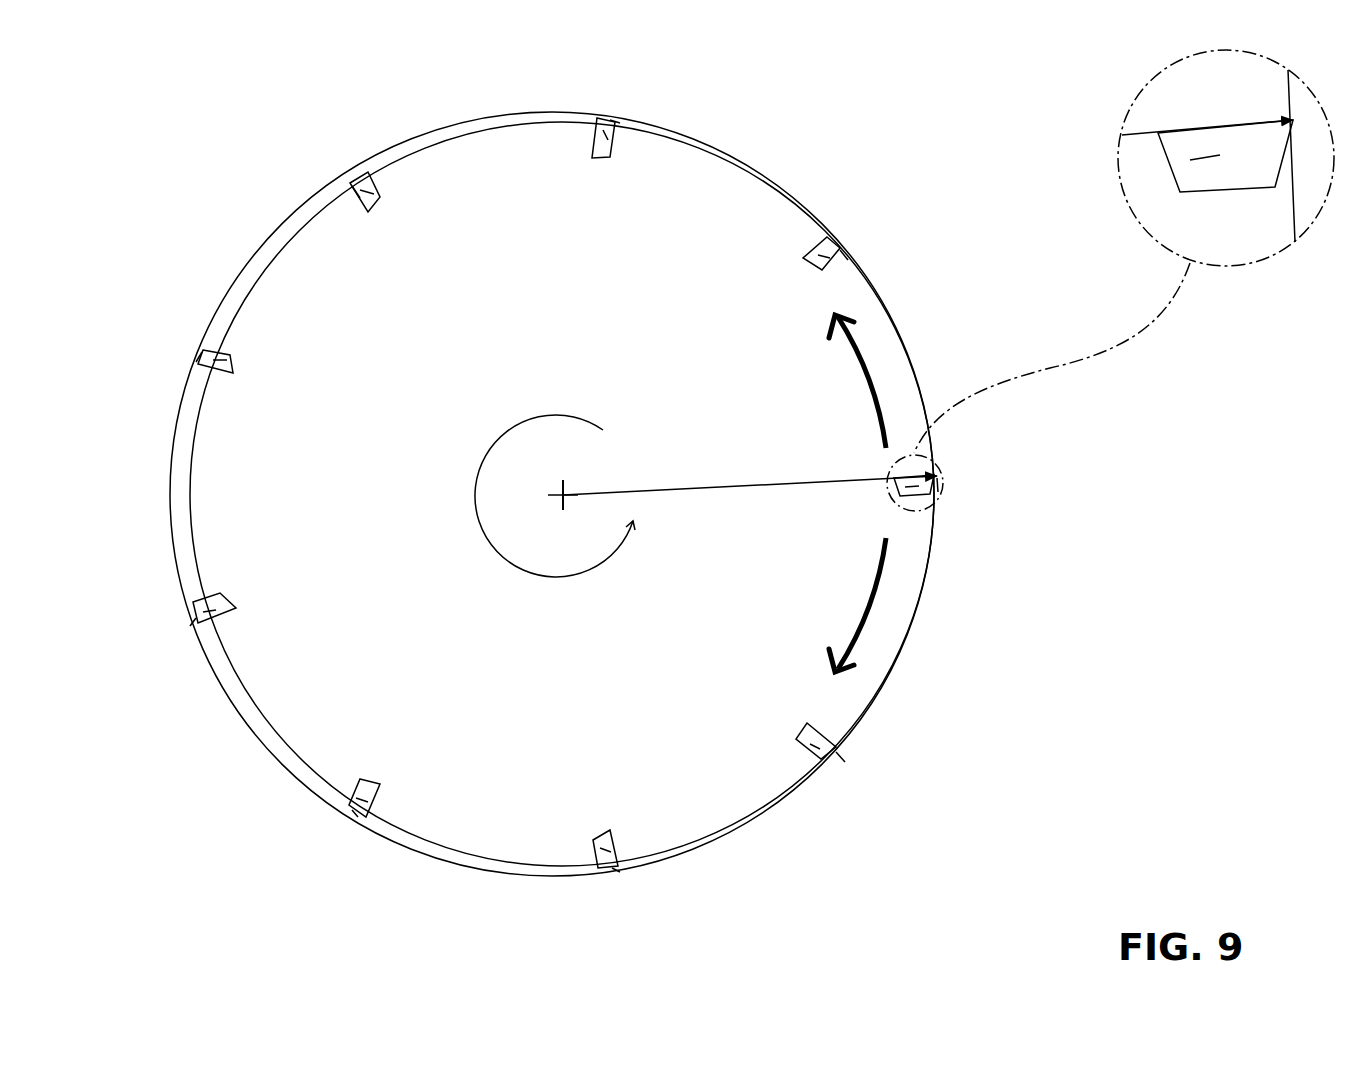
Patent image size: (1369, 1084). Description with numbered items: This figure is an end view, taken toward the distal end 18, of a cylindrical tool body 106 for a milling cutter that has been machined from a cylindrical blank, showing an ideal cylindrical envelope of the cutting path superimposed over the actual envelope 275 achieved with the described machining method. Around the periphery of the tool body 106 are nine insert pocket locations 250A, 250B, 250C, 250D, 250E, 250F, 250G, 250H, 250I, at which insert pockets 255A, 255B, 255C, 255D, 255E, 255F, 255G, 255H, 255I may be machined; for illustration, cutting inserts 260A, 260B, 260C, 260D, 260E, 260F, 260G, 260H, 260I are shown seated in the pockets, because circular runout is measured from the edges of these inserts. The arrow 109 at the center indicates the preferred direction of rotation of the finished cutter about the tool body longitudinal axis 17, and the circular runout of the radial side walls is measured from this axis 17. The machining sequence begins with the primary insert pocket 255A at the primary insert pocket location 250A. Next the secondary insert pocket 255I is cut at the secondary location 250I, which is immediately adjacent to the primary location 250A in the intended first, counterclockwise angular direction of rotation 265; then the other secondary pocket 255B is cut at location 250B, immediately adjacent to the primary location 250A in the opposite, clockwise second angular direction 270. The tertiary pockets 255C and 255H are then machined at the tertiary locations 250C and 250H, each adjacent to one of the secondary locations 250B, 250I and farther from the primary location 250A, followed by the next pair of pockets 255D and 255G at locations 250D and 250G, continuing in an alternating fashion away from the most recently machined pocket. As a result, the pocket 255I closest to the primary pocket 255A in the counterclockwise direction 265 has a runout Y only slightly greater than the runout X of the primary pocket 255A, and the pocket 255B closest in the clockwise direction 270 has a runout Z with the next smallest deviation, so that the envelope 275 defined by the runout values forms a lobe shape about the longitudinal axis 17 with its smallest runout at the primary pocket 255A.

The tool body longitudinal axis 17 is at (570, 487).
The distal end 18 is at (575, 572).
The cylindrical tool body 106 is at (562, 494).
The arrow indicating preferred direction of rotation 109 is at (481, 474).
The first angular direction of rotation 265 is at (872, 407).
The second angular direction 270 is at (874, 604).
The envelope 275 is at (169, 518).
The primary insert pocket location 250A is at (946, 459).
The primary insert pocket 255A is at (928, 493).
The cutting insert 260A is at (938, 482).
The secondary insert pocket location 250B is at (843, 764).
The secondary insert pocket 255B is at (818, 757).
The cutting insert 260B is at (834, 758).
The tertiary insert pocket location 250C is at (602, 878).
The tertiary insert pocket 255C is at (600, 850).
The cutting insert 260C is at (612, 868).
The next insert pocket location 250D is at (338, 822).
The insert pocket 255D is at (362, 802).
The cutting insert 260D is at (358, 817).
The insert pocket location 250E is at (185, 607).
The insert pocket 255E is at (212, 612).
The cutting insert 260E is at (195, 613).
The insert pocket location 250F is at (187, 337).
The insert pocket 255F is at (220, 358).
The cutting insert 260F is at (203, 352).
The next insert pocket location 250G is at (352, 158).
The insert pocket 255G is at (370, 192).
The cutting insert 260G is at (360, 198).
The tertiary insert pocket location 250H is at (605, 108).
The tertiary insert pocket 255H is at (617, 142).
The cutting insert 260H is at (612, 120).
The secondary insert pocket location 250I is at (841, 222).
The secondary insert pocket 255I is at (824, 262).
The cutting insert 260I is at (832, 244).